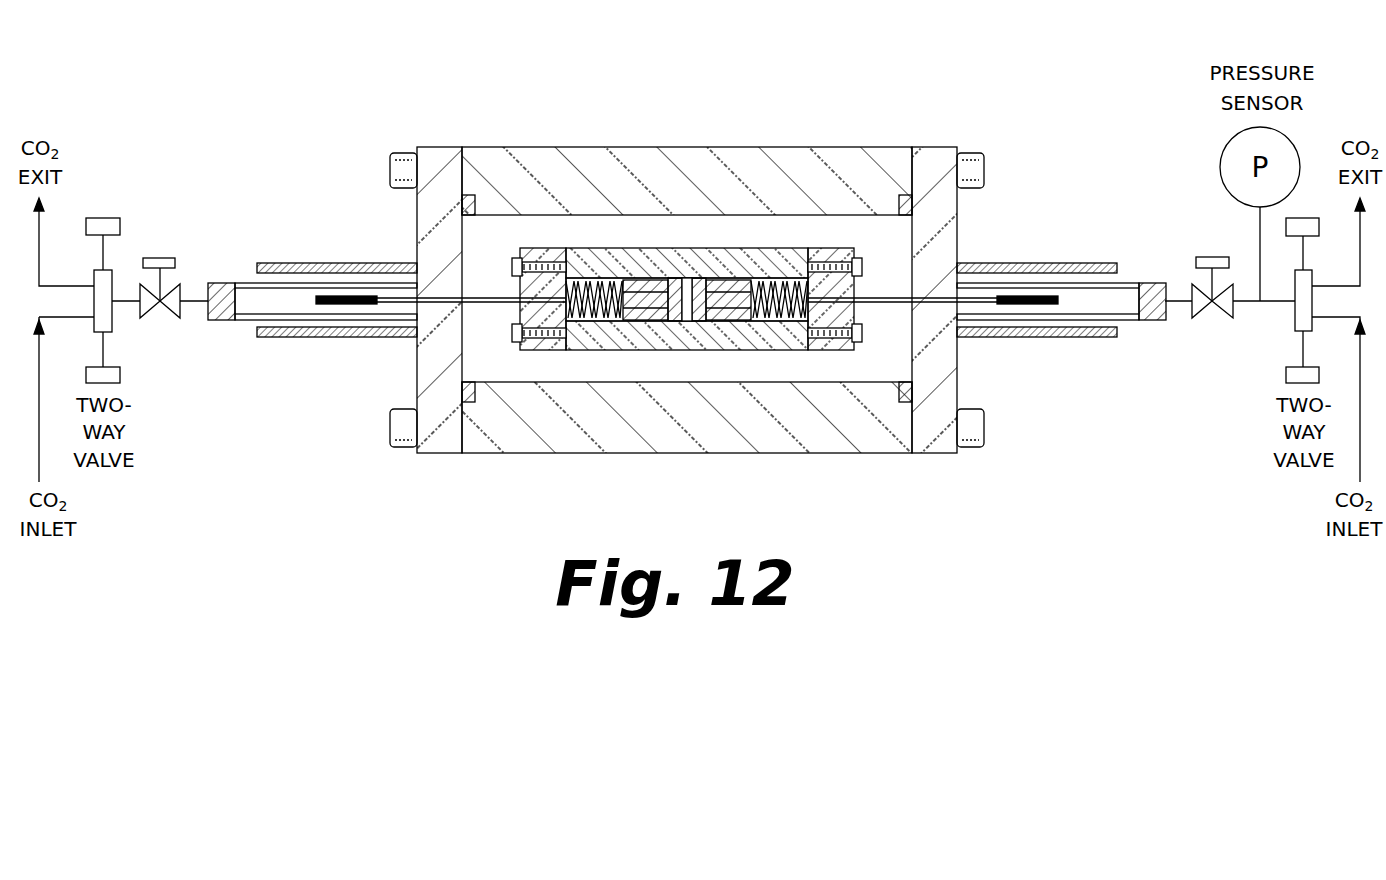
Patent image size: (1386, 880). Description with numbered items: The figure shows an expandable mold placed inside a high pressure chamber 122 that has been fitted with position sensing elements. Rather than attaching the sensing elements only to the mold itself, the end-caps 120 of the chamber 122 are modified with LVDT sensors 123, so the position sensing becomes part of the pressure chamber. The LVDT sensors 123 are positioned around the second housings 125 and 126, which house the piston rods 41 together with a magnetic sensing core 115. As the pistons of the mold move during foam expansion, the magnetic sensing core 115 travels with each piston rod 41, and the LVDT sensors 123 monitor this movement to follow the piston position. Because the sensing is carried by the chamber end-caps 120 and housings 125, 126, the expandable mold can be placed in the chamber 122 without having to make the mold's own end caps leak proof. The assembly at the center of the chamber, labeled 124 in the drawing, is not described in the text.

The piston rod 41 is at (395, 302).
The magnetic sensing core 115 is at (335, 304).
The end-cap 120 is at (437, 232).
The chamber 122 is at (677, 178).
The LVDT sensor 123 is at (283, 337).
The sample holder assembly 124 is at (690, 322).
The second housing 125 is at (222, 293).
The second housing 126 is at (1148, 312).